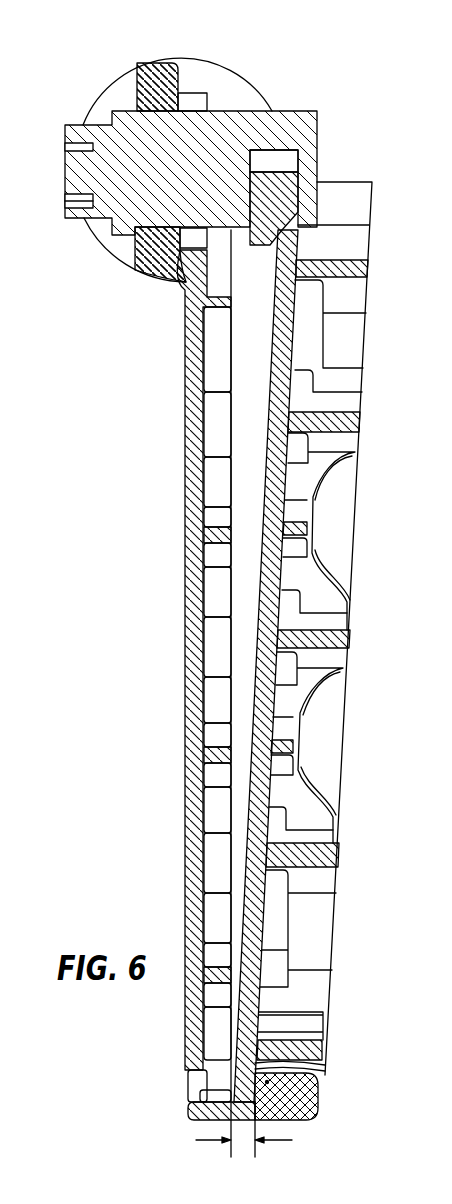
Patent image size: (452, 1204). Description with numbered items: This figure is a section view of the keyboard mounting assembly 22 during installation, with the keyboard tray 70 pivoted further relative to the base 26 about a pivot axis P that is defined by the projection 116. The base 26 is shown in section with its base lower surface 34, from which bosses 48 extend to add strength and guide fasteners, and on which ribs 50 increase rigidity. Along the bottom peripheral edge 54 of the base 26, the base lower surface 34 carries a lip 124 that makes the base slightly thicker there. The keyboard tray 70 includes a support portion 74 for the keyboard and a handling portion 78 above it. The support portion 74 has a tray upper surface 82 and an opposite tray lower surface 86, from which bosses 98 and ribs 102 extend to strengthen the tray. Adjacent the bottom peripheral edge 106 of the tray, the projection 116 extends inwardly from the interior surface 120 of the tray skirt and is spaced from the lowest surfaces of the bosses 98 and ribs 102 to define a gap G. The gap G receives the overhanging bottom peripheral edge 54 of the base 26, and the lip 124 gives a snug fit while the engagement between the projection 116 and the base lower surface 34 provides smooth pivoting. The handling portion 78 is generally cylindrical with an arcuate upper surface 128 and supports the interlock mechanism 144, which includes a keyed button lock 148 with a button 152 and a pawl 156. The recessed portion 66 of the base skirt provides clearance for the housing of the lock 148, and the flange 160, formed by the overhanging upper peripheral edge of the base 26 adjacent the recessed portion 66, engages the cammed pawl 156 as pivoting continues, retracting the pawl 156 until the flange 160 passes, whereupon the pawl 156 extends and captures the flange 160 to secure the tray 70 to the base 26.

The keyboard mounting assembly 22 is at (100, 373).
The base 26 is at (372, 182).
The base lower surface 34 is at (282, 1000).
The bosses 48 is at (348, 462).
The ribs 50 is at (340, 640).
The bottom peripheral edge 54 is at (230, 1093).
The recessed portion 66 is at (343, 252).
The keyboard tray 70 is at (184, 340).
The support portion 74 is at (184, 698).
The handling portion 78 is at (102, 253).
The tray upper surface 82 is at (184, 772).
The tray lower surface 86 is at (206, 466).
The bosses 98 is at (206, 505).
The ribs 102 is at (225, 390).
The bottom peripheral edge 106 is at (188, 1105).
The projection 116 is at (318, 1108).
The interior surface 120 is at (227, 1095).
The lip 124 is at (320, 1065).
The arcuate upper surface 128 is at (113, 108).
The interlock mechanism 144 is at (346, 110).
The lock 148 is at (65, 155).
The button 152 is at (65, 188).
The pawl 156 is at (272, 247).
The flange 160 is at (307, 240).
The gap G is at (254, 1142).
The pivot axis P is at (300, 1120).